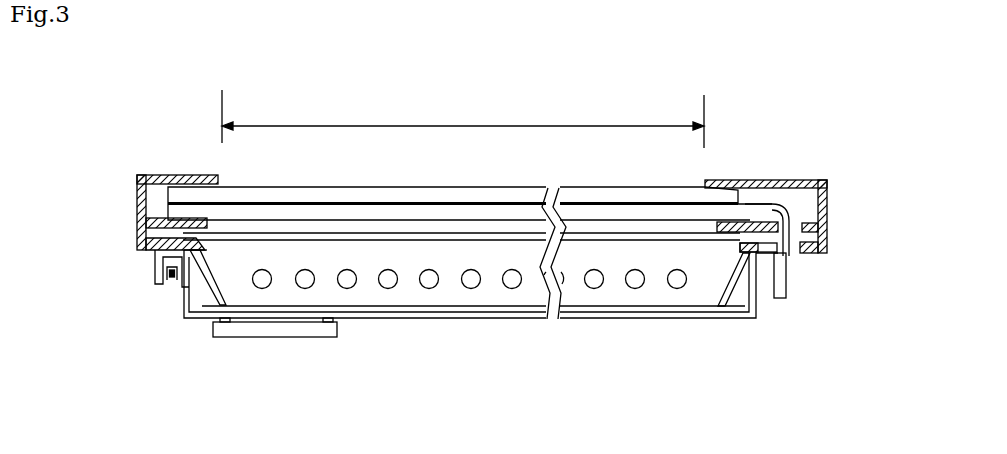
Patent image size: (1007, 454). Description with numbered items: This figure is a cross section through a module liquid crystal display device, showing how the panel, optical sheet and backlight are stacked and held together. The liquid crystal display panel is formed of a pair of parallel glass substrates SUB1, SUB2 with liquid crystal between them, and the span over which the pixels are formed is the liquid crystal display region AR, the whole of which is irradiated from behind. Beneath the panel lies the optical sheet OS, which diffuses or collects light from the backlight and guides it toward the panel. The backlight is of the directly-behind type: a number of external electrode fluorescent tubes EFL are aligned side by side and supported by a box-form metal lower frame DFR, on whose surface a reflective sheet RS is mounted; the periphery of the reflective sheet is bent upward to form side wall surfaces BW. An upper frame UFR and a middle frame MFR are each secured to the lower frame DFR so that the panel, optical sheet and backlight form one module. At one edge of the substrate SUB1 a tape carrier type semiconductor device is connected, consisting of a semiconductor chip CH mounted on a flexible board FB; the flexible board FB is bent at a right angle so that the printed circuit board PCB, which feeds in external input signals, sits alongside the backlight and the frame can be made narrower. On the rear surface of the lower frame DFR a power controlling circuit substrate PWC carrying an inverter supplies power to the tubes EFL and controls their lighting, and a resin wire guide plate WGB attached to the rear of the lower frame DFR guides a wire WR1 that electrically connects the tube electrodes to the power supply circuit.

The liquid crystal display region AR is at (463, 119).
The upper frame UFR is at (193, 175).
The semiconductor chip CH is at (812, 184).
The middle frame MFR is at (157, 244).
The substrate SUB2 is at (166, 175).
The substrate SUB1 is at (704, 217).
The flexible board FB is at (784, 204).
The printed circuit board PCB is at (782, 282).
The optical sheet OS is at (659, 238).
The lower frame DFR is at (577, 318).
The reflective sheet RS is at (516, 308).
The side wall surface BW is at (222, 306).
The external electrode fluorescent tube EFL is at (430, 282).
The wire guide plate WGB is at (162, 268).
The wire WR1 is at (172, 276).
The power controlling circuit substrate PWC is at (305, 337).